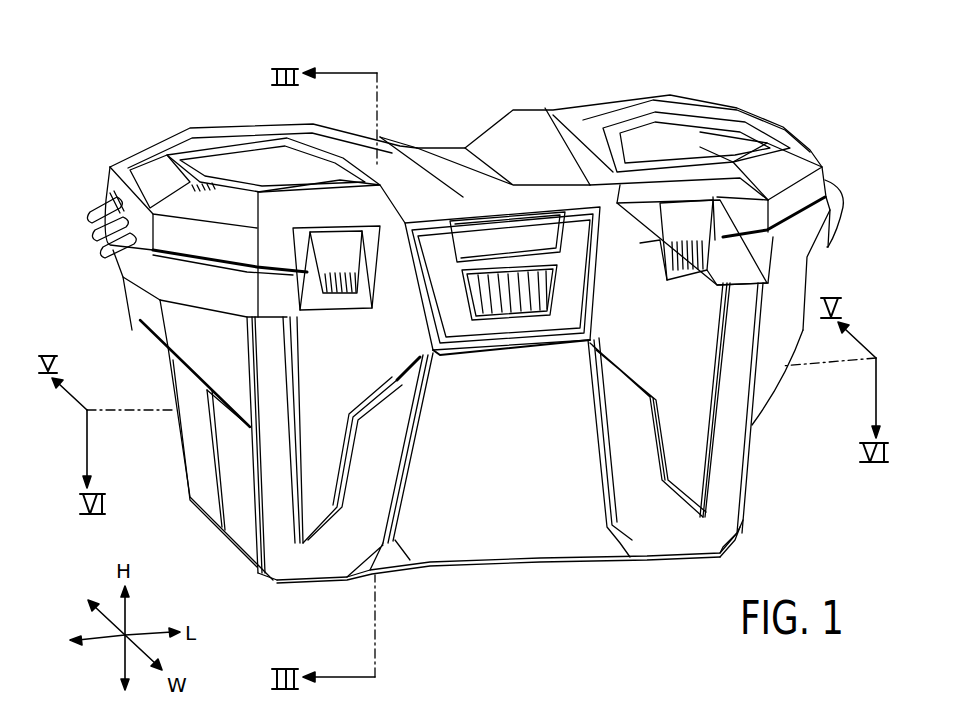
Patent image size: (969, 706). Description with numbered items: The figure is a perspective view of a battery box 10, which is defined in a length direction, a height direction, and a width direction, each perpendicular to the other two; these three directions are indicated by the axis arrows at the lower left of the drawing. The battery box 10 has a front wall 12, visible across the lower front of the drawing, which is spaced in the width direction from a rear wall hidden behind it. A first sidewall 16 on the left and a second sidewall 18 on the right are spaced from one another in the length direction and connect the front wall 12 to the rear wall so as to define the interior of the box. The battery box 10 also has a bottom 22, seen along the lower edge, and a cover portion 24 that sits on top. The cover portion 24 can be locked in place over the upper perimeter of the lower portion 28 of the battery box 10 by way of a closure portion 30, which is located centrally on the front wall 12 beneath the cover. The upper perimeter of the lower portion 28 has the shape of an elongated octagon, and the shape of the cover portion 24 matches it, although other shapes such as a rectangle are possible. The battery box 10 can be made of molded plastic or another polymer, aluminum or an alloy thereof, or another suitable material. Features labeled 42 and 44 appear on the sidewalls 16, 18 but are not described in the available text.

The battery box 10 is at (804, 104).
The front wall 12 is at (567, 528).
The first sidewall 16 is at (197, 457).
The second sidewall 18 is at (750, 463).
The bottom 22 is at (337, 582).
The cover portion 24 is at (443, 148).
The lower portion 28 is at (745, 519).
The closure portion 30 is at (477, 353).
The chamfered recess 42 is at (138, 323).
The chamfered recess 44 is at (791, 334).